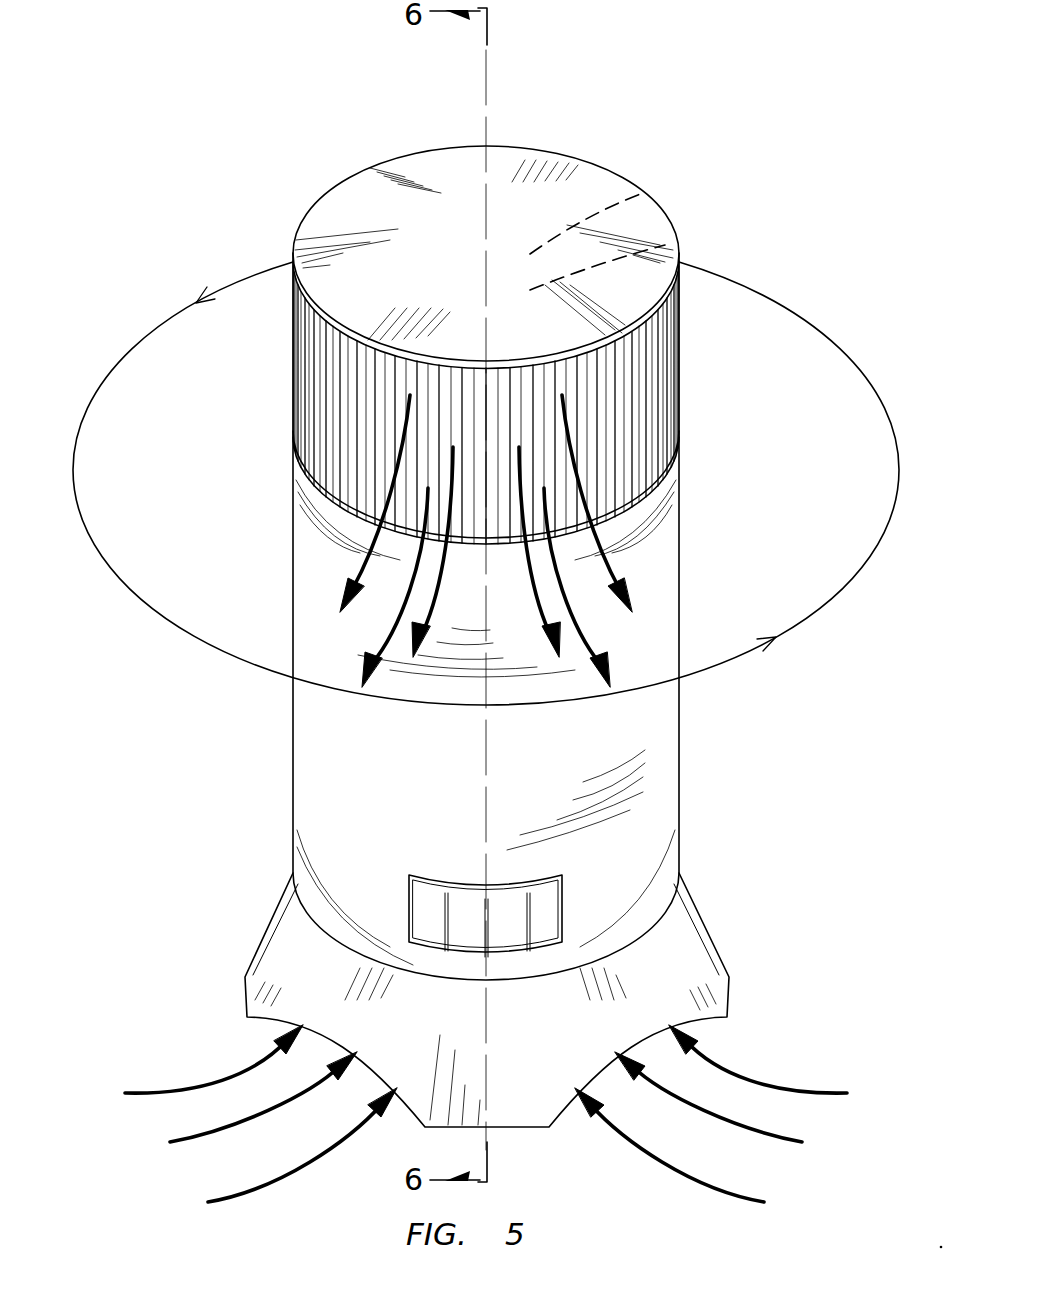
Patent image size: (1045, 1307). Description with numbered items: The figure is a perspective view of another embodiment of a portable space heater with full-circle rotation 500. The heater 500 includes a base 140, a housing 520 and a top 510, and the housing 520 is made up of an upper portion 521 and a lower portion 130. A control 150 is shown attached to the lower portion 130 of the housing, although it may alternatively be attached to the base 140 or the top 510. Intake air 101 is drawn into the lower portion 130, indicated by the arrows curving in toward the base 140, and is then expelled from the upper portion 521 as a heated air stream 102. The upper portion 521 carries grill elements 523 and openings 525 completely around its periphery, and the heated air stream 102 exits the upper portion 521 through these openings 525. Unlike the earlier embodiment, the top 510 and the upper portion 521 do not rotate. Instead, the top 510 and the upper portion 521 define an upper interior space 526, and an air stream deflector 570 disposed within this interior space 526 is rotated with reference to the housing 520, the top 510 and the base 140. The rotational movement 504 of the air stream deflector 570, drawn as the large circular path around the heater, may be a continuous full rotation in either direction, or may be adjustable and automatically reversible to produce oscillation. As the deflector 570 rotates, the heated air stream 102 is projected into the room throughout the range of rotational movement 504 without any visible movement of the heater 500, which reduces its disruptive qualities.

The portable space heater with 360° rotation 500 is at (205, 98).
The top 510 is at (613, 173).
The upper interior space 526 is at (640, 192).
The air stream deflector 570 is at (677, 240).
The housing 520 is at (856, 382).
The upper portion 521 is at (790, 356).
The grill elements 523 is at (635, 408).
The openings 525 is at (630, 452).
The lower portion 130 is at (679, 570).
The control 150 is at (563, 893).
The base 140 is at (704, 924).
The rotational movement 504 is at (813, 613).
The heated air stream 102 is at (340, 557).
The intake air 101 is at (735, 1075).